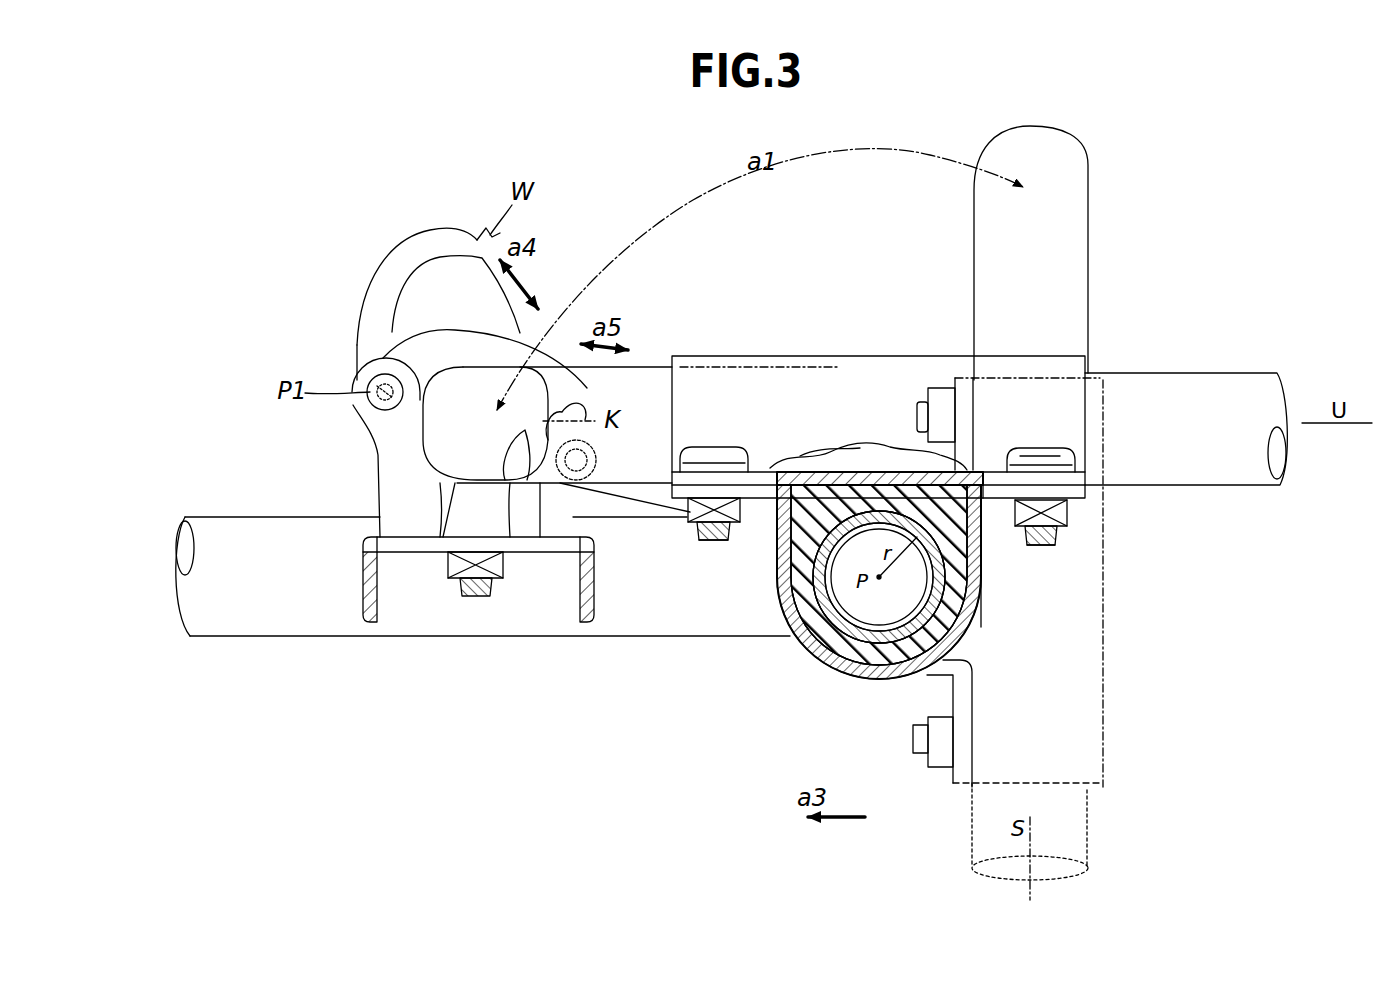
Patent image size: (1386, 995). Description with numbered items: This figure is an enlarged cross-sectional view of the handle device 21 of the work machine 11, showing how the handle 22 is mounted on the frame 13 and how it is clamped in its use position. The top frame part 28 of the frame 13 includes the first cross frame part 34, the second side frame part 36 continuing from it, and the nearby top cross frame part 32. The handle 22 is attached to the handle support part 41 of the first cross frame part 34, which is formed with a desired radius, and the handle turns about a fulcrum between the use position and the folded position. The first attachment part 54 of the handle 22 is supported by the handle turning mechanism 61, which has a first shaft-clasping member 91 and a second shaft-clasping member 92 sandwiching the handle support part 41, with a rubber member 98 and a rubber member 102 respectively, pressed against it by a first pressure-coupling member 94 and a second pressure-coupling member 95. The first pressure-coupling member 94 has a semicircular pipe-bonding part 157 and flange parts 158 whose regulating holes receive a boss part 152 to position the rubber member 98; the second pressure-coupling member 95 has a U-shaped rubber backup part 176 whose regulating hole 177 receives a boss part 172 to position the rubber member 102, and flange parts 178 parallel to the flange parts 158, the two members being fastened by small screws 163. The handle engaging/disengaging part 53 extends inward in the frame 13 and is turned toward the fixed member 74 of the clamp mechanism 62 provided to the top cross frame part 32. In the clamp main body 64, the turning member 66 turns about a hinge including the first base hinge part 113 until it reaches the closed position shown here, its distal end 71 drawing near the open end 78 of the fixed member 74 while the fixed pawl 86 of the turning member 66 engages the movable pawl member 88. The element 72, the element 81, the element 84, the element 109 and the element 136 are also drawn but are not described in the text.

The work machine 11 is at (226, 152).
The frame 13 is at (186, 468).
The handle device 21 is at (597, 155).
The handle 22 is at (1090, 220).
The top frame part 28 is at (476, 628).
The top cross frame part 32 is at (403, 556).
The first cross frame part 34 is at (866, 628).
The second side frame part 36 is at (190, 642).
The handle support part 41 is at (866, 628).
The handle engaging/disengaging part 53 is at (450, 556).
The first attachment part 54 is at (886, 382).
The handle turning mechanism 61 is at (875, 300).
The clamp mechanism 62 is at (536, 465).
The clamp main body 64 is at (314, 441).
The turning member 66 is at (482, 266).
The distal end 71 is at (482, 266).
The cam portion 72 is at (536, 465).
The fixed member 74 is at (314, 441).
The open end 78 is at (563, 270).
The pin 81 is at (512, 483).
The upper portion 84 is at (378, 472).
The fixed pawl 86 is at (395, 236).
The movable pawl member 88 is at (536, 465).
The first shaft-clasping member 91 is at (1002, 575).
The second shaft-clasping member 92 is at (1002, 575).
The first pressure-coupling member 94 is at (800, 365).
The second pressure-coupling member 95 is at (830, 655).
The rubber member 98 is at (1002, 575).
The rubber member 102 is at (972, 533).
The bolt 109 is at (478, 600).
The first base hinge part 113 is at (352, 387).
The pin 136 is at (592, 480).
The boss part 152 is at (872, 465).
The pipe-bonding part 157 is at (920, 385).
The flange parts 158 is at (997, 470).
The small screws 163 is at (705, 445).
The boss part 172 is at (844, 613).
The rubber backup part 176 is at (875, 678).
The regulating hole 177 is at (928, 748).
The flange parts 178 is at (712, 540).